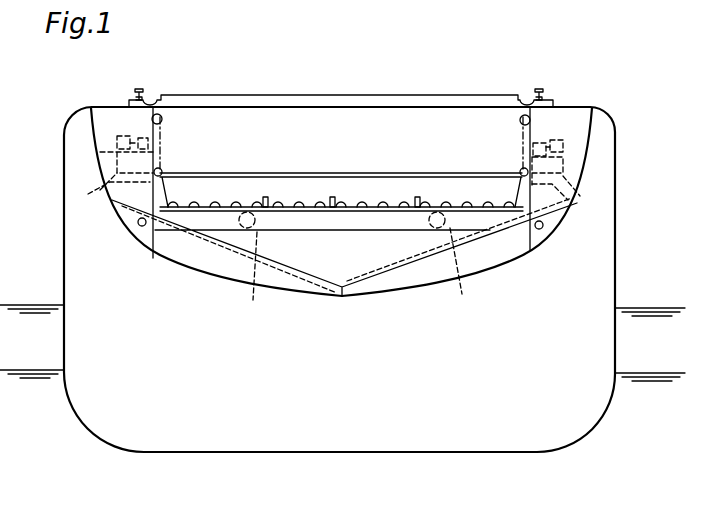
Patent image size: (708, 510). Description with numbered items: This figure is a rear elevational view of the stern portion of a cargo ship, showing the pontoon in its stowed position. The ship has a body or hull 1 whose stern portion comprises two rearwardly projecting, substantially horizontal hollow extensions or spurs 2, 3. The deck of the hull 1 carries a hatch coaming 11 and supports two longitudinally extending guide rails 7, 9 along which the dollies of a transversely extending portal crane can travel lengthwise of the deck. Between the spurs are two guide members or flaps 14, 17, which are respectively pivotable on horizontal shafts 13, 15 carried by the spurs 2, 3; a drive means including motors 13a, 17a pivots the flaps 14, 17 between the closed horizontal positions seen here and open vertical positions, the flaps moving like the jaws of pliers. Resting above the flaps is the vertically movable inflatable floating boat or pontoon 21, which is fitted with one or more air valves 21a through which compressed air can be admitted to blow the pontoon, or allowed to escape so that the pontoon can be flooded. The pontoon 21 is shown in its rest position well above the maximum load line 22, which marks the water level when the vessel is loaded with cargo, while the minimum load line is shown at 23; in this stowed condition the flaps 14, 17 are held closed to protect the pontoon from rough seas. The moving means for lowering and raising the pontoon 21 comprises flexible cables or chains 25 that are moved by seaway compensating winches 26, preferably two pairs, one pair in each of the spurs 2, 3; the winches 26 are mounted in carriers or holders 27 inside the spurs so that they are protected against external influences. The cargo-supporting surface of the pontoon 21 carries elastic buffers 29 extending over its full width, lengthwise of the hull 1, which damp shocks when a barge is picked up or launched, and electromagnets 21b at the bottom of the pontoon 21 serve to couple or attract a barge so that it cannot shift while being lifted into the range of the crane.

The hull 1 is at (502, 443).
The spur 2 is at (99, 115).
The spur 3 is at (585, 132).
The guide rail 7 is at (142, 96).
The guide rail 9 is at (539, 90).
The hatch coaming 11 is at (357, 95).
The horizontal shaft 13 is at (141, 227).
The hatch 13a is at (111, 191).
The flap 14 is at (228, 268).
The horizontal shaft 15 is at (541, 229).
The flap 17 is at (420, 279).
The motor 17a is at (572, 195).
The pontoon 21 is at (353, 226).
The air valve 21a is at (366, 268).
The electromagnet 21b is at (413, 197).
The maximum load line 22 is at (654, 306).
The minimum load line 23 is at (664, 378).
The cable 25 is at (162, 137).
The seaway compensating winch 26 is at (117, 141).
The holder 27 is at (107, 163).
The buffer 29 is at (216, 203).